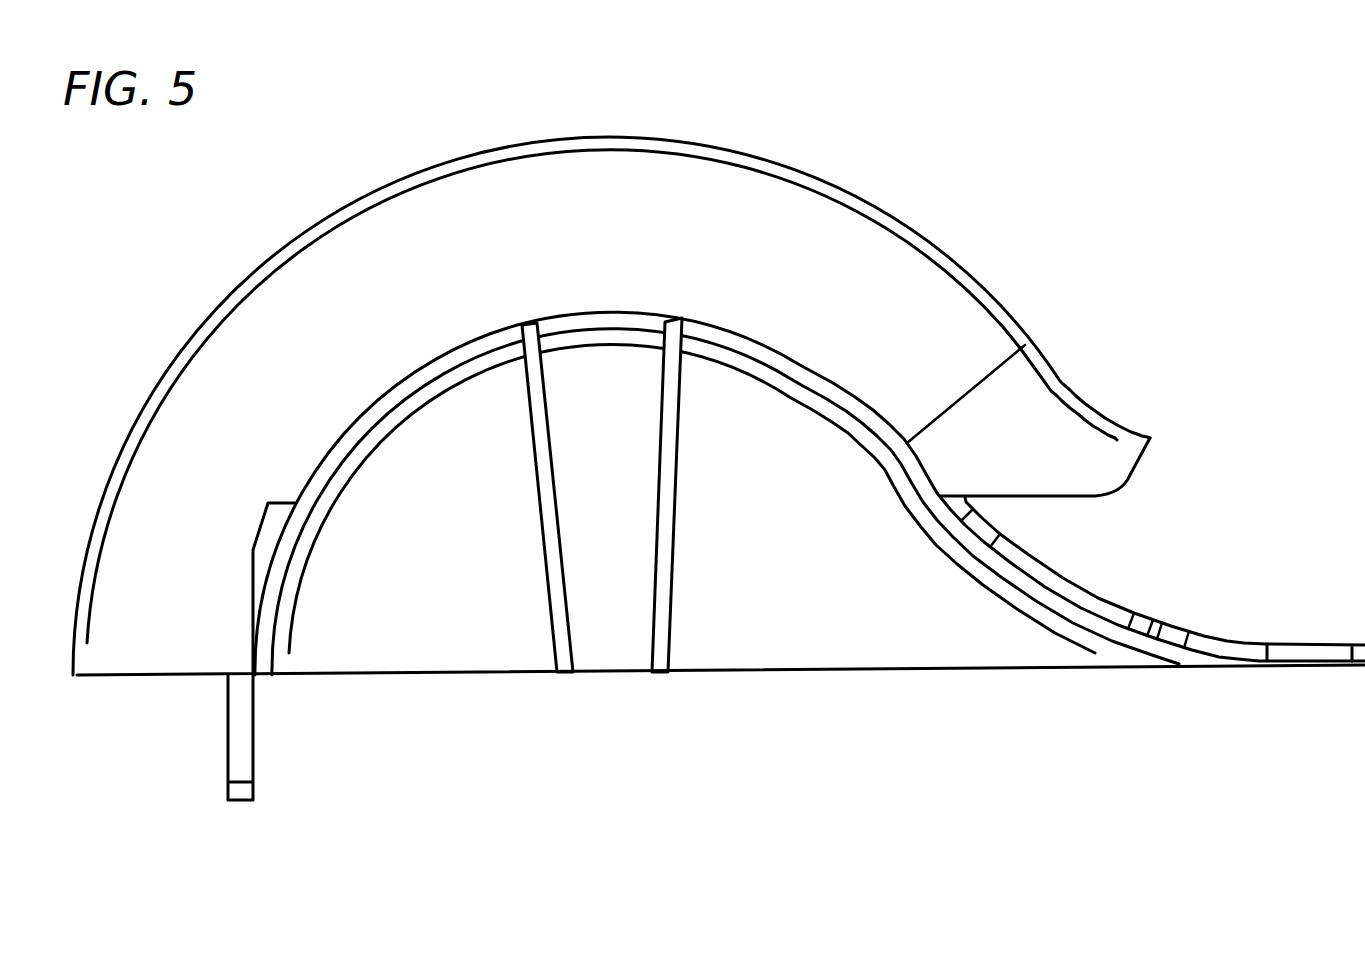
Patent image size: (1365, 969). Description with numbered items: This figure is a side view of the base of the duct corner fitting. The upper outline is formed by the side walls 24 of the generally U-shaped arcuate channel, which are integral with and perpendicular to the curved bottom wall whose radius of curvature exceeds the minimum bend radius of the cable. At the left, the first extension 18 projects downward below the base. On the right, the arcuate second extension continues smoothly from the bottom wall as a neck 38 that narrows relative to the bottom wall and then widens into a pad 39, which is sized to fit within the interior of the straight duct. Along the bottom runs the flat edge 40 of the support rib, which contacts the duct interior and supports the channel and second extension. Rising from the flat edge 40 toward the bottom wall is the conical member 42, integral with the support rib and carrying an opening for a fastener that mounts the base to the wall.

The first extension 18 is at (242, 743).
The side walls 24 is at (723, 188).
The neck 38 is at (1072, 590).
The pad 39 is at (1267, 643).
The flat edge 40 is at (812, 672).
The conical member 42 is at (612, 650).